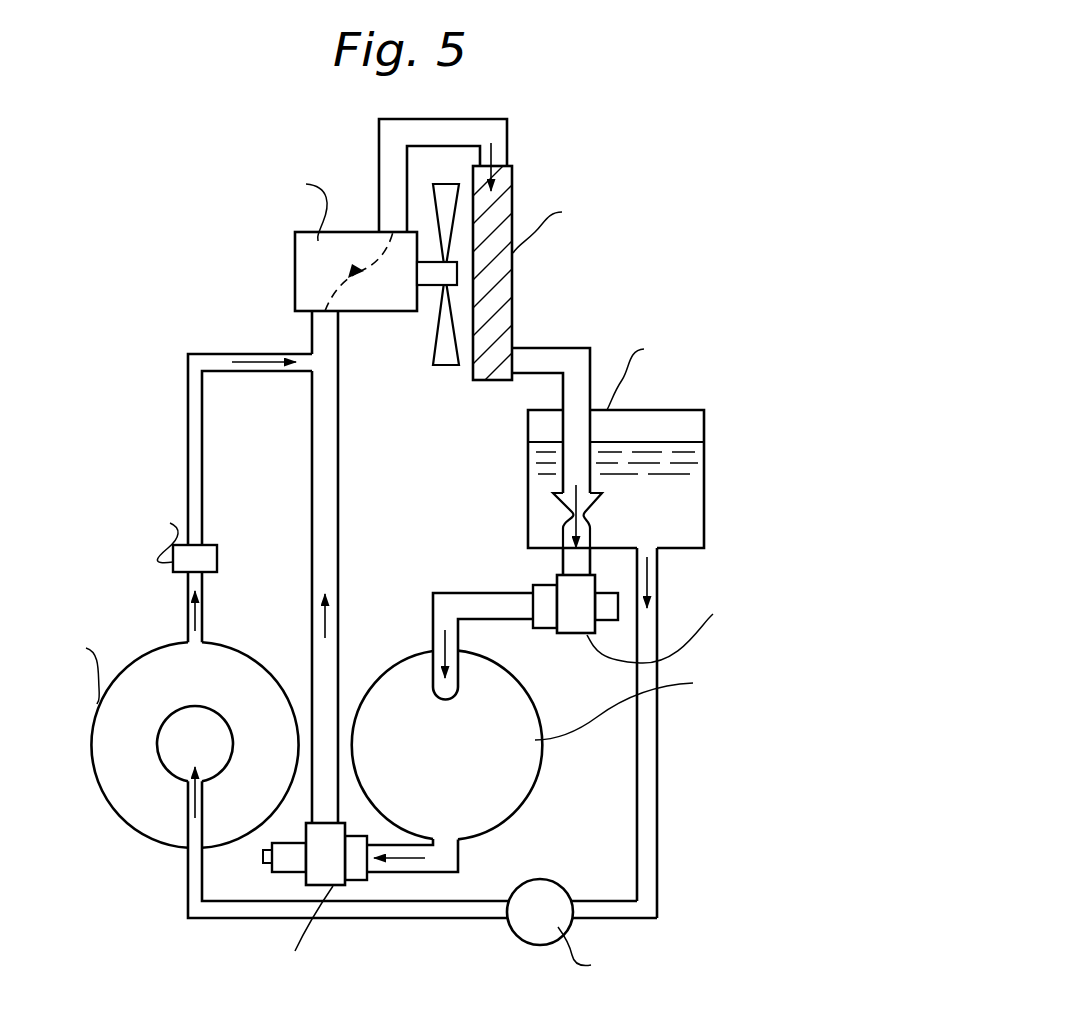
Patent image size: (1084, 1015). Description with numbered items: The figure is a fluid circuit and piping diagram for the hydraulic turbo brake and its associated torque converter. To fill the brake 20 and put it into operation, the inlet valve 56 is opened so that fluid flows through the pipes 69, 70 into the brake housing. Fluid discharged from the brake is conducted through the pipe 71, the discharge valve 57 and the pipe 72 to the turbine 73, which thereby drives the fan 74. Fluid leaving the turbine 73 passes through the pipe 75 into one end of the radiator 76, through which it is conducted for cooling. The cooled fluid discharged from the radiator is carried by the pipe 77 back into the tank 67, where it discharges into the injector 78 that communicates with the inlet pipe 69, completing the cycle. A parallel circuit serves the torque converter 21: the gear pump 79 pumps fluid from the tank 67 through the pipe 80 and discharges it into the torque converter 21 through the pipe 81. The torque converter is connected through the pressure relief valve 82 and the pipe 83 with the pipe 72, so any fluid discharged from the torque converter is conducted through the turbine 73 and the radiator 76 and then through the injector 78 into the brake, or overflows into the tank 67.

The pipe 75 is at (379, 146).
The turbine 73 is at (295, 272).
The fan 74 is at (433, 351).
The radiator 76 is at (500, 291).
The pipe 77 is at (588, 366).
The tank 67 is at (704, 500).
The injector 78 is at (565, 522).
The pipe 69 is at (563, 560).
The inlet valve 56 is at (570, 634).
The pipe 70 is at (433, 605).
The brake 20 is at (533, 777).
The pipe 71 is at (427, 866).
The discharge valve 57 is at (337, 885).
The pipe 72 is at (338, 440).
The pipe 83 is at (202, 446).
The pressure relief valve 82 is at (217, 560).
The torque converter 21 is at (127, 805).
The pipe 81 is at (187, 907).
The pipe 80 is at (657, 850).
The gear pump 79 is at (542, 935).